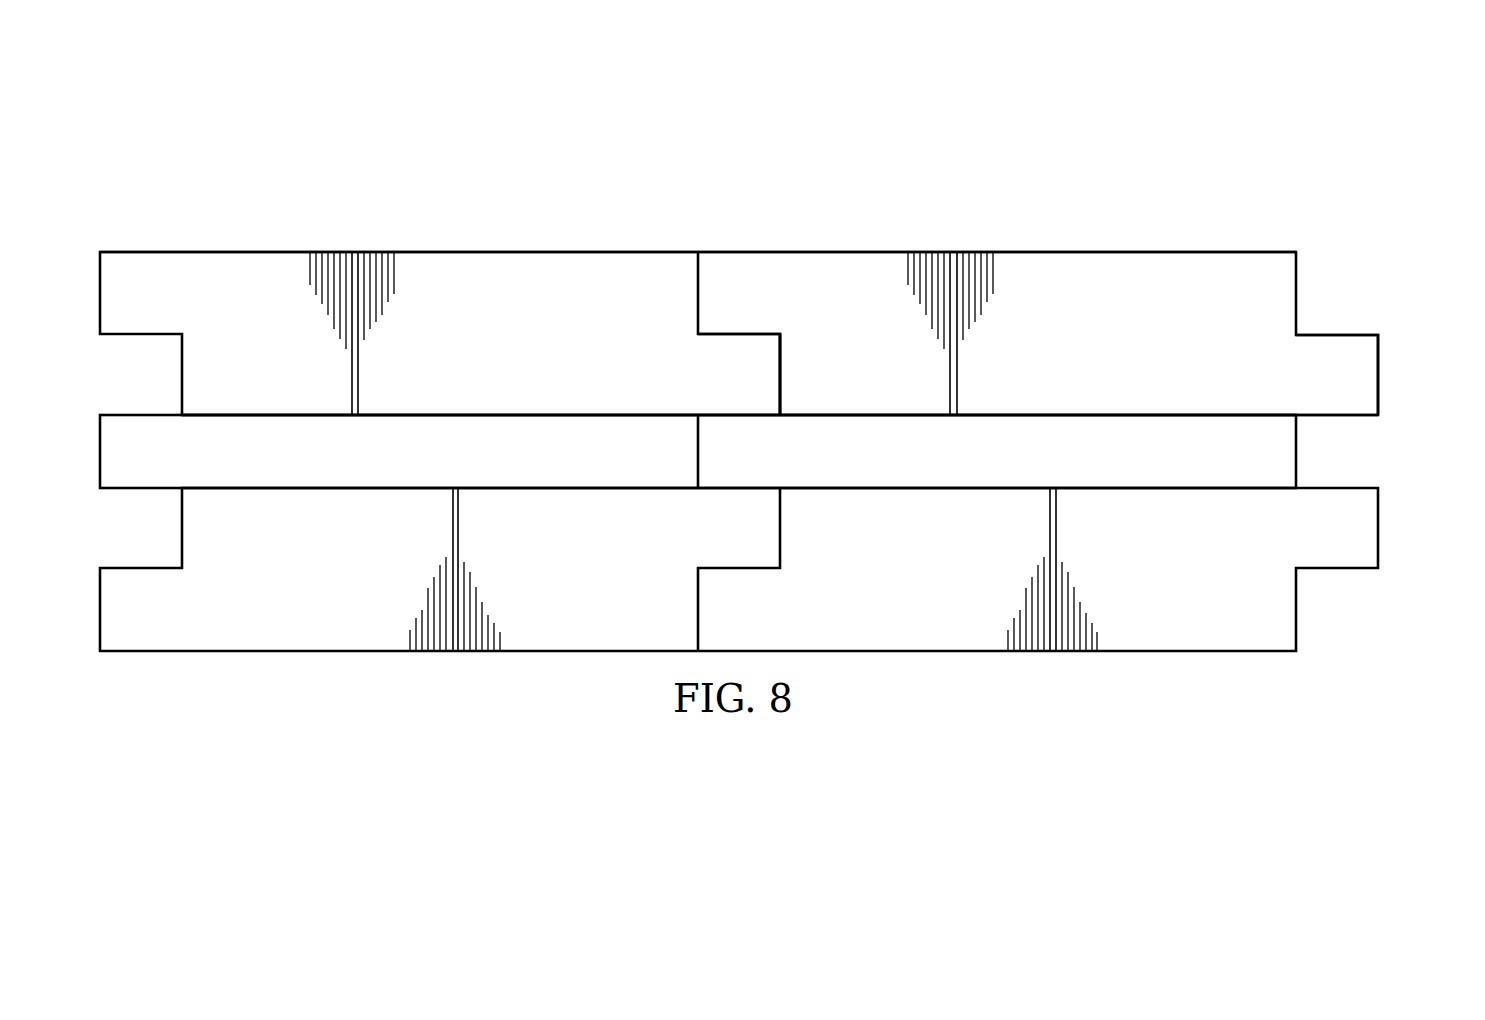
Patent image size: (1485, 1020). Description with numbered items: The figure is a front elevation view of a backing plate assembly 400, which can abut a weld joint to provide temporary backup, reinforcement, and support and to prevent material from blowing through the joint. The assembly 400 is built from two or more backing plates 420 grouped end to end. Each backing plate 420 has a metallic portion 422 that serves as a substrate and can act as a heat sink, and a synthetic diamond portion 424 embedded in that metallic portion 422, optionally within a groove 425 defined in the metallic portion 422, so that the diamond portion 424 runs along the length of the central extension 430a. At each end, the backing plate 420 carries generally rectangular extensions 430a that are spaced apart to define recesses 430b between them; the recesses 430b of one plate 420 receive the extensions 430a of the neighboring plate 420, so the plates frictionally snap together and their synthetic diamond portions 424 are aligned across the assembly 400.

The backing plate assembly 400 is at (597, 93).
The backing plate 420 is at (1058, 253).
The metallic portion 422 is at (1187, 260).
The synthetic diamond portion 424 is at (1203, 426).
The groove 425 is at (1106, 418).
The extension 430a is at (780, 365).
The recess 430b is at (780, 392).